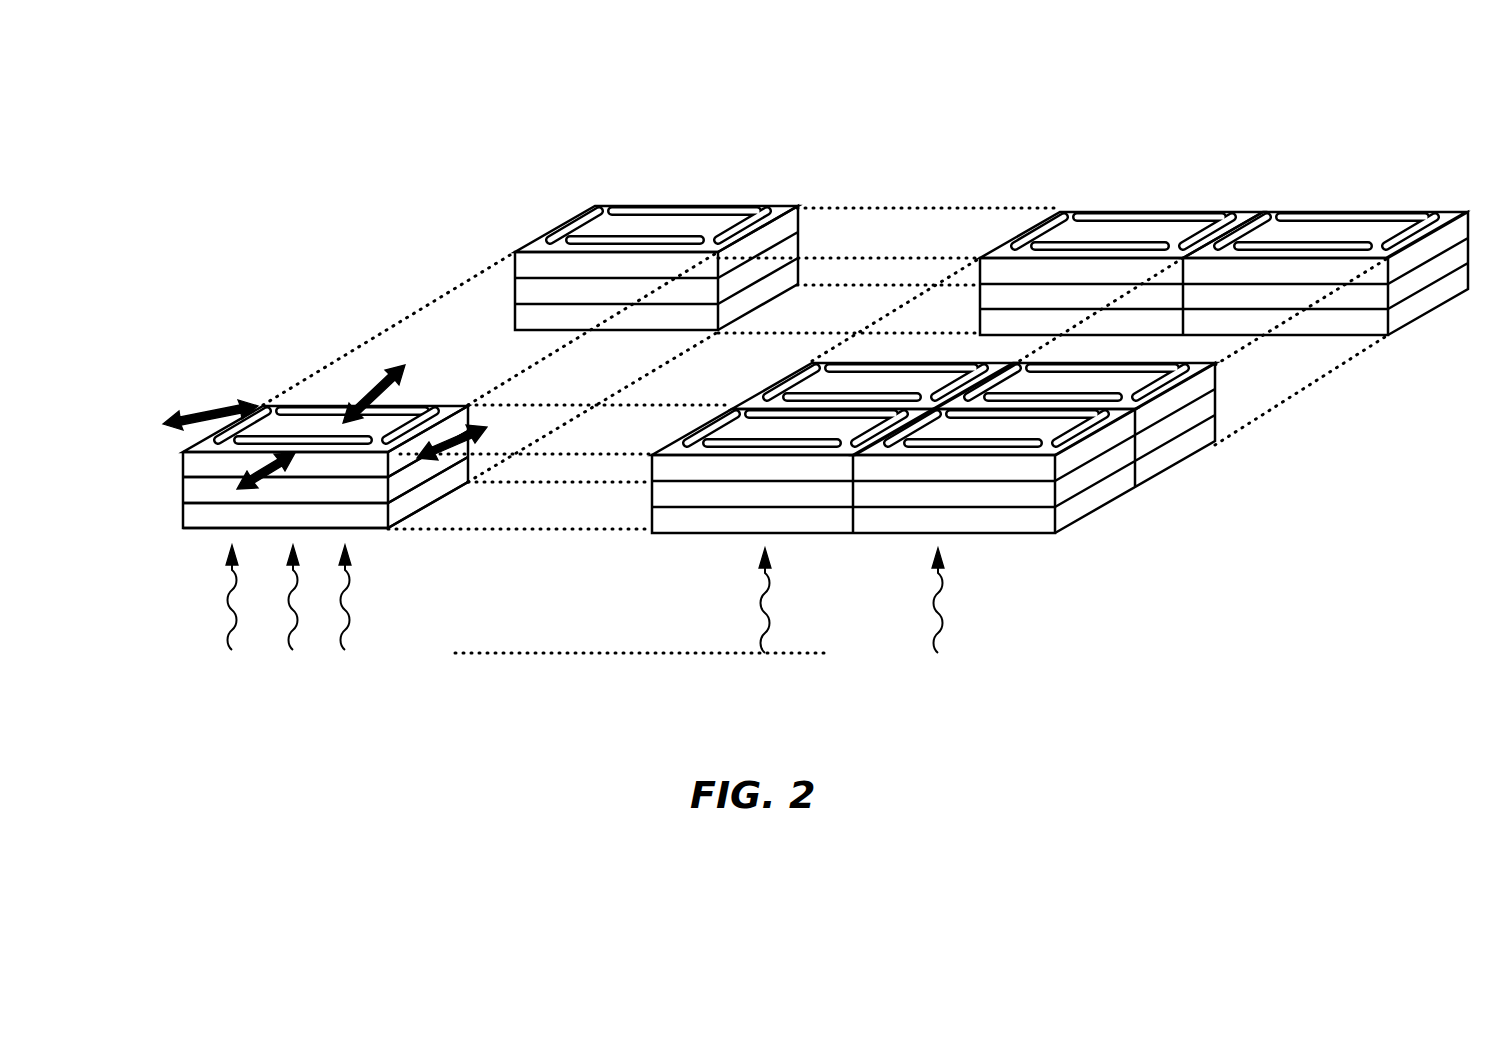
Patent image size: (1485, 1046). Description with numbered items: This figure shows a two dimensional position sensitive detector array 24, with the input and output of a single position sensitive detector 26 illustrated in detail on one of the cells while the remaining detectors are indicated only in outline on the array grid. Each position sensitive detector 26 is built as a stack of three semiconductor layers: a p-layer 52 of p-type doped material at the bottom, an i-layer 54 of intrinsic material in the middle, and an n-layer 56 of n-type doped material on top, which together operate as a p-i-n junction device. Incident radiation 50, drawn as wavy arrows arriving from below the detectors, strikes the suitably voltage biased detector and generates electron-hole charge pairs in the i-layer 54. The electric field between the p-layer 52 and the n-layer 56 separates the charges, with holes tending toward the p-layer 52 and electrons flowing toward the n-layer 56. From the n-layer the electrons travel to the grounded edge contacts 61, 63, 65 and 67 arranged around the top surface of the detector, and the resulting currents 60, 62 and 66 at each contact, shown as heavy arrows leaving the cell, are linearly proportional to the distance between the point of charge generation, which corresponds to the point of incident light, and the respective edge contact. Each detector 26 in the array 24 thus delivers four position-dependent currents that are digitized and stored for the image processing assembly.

The two dimensional position sensitive detector array 24 is at (1135, 140).
The position sensitive detector 26 is at (317, 427).
The incident radiation 50 is at (347, 613).
The p-layer 52 is at (195, 516).
The i-layer 54 is at (195, 489).
The n-layer 56 is at (195, 462).
The current 60 is at (188, 416).
The edge contact 61 is at (262, 405).
The current 62 is at (248, 490).
The edge contact 63 is at (310, 445).
The edge contact 65 is at (425, 407).
The current 66 is at (397, 378).
The back electrode strip 67 is at (295, 402).